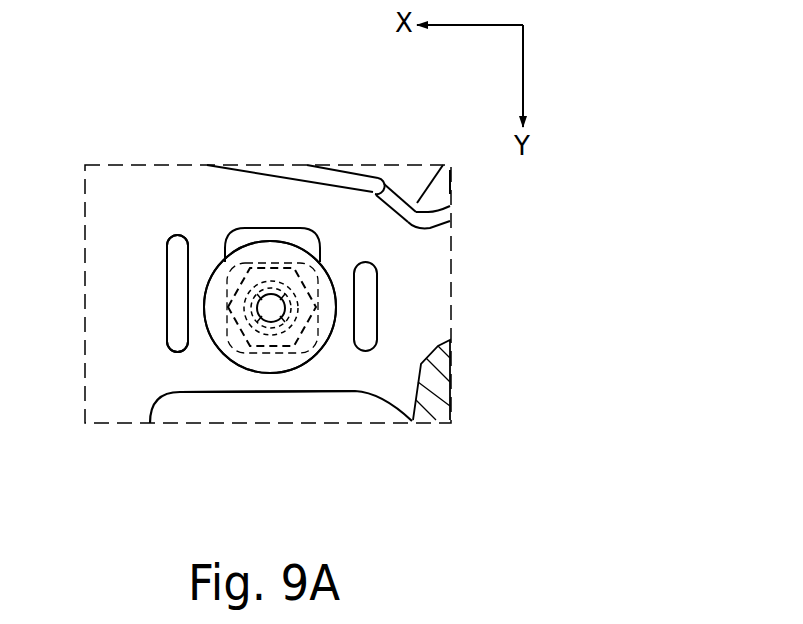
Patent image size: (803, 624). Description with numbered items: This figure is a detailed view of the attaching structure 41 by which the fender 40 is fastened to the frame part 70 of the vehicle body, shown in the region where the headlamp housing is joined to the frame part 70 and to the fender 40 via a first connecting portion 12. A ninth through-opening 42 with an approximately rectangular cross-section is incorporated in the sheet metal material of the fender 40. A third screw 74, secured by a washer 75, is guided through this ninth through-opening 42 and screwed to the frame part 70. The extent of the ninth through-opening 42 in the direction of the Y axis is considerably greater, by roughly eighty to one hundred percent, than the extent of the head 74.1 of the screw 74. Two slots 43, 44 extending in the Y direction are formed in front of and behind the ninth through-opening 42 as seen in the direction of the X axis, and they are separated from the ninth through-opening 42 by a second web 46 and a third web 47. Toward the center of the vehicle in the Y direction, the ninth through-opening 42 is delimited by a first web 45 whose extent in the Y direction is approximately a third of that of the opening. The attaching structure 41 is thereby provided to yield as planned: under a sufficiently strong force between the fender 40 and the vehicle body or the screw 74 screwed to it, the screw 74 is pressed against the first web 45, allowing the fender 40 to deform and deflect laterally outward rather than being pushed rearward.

The first connecting portion 12 is at (412, 422).
The fender 40 is at (421, 190).
The attaching structure 41 is at (185, 203).
The ninth through-opening 42 is at (247, 227).
The slot 43 is at (379, 298).
The slot 44 is at (176, 300).
The first web 45 is at (232, 394).
The second web 46 is at (328, 260).
The third web 47 is at (197, 257).
The frame part 70 is at (177, 408).
The third screw 74 is at (294, 343).
The head 74.1 is at (278, 262).
The washer 75 is at (220, 347).